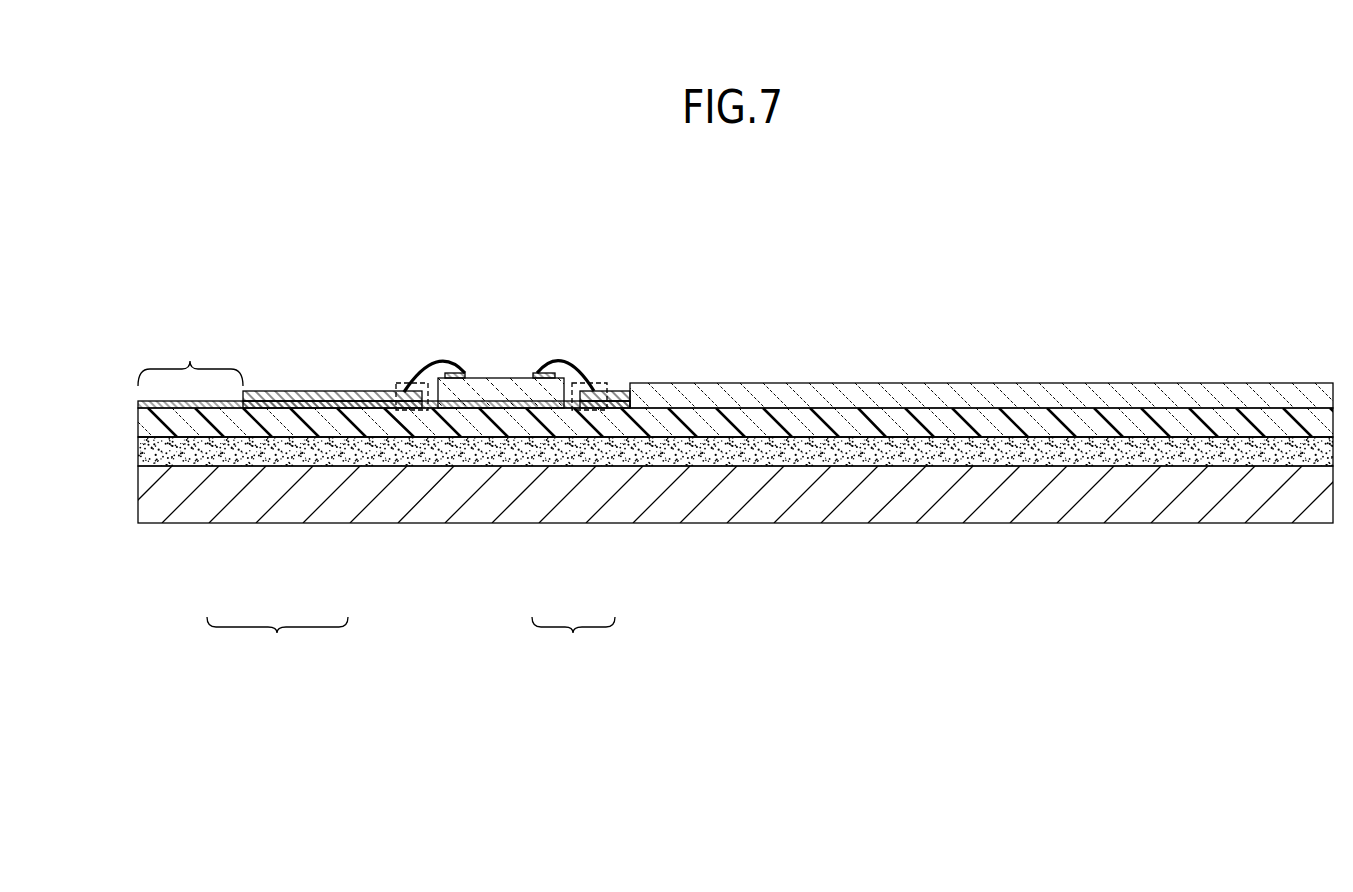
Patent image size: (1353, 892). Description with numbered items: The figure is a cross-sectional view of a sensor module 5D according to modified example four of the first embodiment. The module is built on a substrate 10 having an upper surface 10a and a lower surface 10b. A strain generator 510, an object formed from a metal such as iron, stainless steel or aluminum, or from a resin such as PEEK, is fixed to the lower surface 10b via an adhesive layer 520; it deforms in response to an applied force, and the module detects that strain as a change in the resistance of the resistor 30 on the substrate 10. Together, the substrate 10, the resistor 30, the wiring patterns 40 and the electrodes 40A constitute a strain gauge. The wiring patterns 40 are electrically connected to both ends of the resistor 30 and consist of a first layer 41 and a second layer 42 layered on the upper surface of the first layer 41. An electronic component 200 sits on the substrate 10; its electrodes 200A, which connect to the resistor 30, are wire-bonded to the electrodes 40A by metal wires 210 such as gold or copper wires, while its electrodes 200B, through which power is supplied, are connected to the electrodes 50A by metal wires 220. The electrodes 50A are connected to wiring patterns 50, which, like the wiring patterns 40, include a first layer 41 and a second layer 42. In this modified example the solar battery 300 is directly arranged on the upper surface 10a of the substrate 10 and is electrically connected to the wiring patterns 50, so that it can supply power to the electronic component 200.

The sensor module 5D is at (184, 226).
The substrate 10 is at (170, 423).
The upper surface of the substrate 10a is at (170, 401).
The lower surface of the substrate 10b is at (170, 448).
The resistor 30 is at (190, 361).
The wiring pattern 40 is at (277, 641).
The electrode 40A is at (400, 382).
The first layer 41 is at (243, 408).
The second layer 42 is at (244, 392).
The wiring pattern 50 is at (573, 641).
The electrode 50A is at (600, 382).
The electronic component 200 is at (498, 378).
The electrode 200A is at (467, 372).
The electrode 200B is at (535, 372).
The metal wire 210 is at (435, 360).
The metal wire 220 is at (560, 360).
The solar battery 300 is at (1037, 397).
The strain generator 510 is at (1123, 512).
The adhesive layer 520 is at (1185, 450).